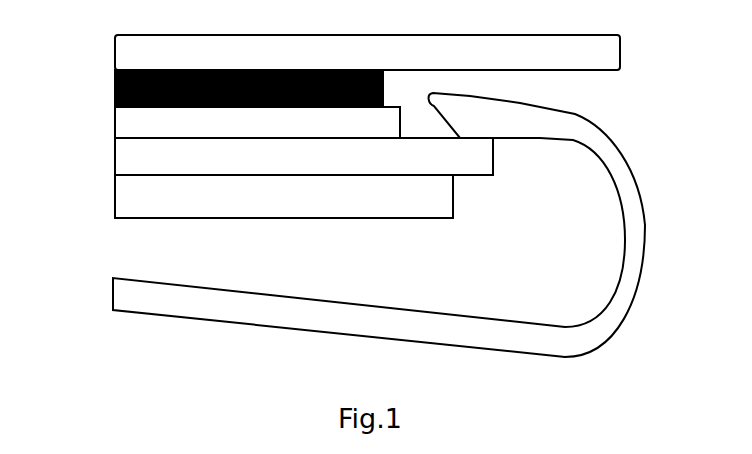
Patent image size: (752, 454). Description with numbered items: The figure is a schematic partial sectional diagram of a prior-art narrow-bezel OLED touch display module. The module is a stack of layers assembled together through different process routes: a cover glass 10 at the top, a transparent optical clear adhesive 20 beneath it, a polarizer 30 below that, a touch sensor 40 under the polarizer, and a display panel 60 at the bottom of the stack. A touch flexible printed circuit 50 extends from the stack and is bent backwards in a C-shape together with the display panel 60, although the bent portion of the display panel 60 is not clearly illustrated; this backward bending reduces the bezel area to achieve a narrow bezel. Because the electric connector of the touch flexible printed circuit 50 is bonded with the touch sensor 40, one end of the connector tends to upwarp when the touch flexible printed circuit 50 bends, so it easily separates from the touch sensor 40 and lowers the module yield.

The cover glass 10 is at (105, 54).
The transparent optical clear adhesive 20 is at (105, 87).
The polarizer 30 is at (105, 119).
The touch sensor 40 is at (105, 153).
The touch flexible printed circuit 50 is at (648, 175).
The display panel 60 is at (105, 193).